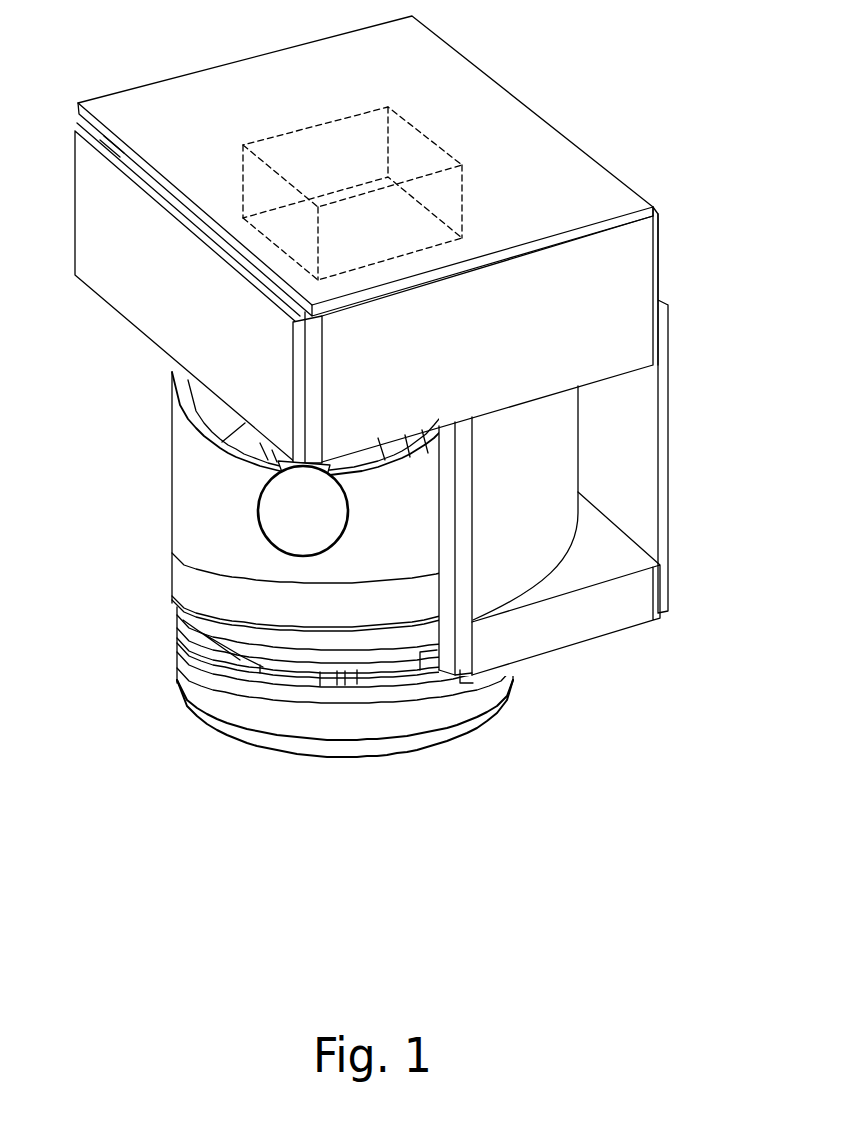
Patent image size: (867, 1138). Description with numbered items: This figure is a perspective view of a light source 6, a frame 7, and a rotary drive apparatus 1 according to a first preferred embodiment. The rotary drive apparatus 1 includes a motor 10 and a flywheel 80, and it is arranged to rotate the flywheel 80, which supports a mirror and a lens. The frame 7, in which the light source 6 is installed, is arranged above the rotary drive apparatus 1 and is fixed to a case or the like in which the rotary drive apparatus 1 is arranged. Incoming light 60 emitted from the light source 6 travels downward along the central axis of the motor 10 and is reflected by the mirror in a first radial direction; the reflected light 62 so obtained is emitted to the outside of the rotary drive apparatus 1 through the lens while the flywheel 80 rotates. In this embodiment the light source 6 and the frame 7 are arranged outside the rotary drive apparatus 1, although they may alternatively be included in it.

The rotary drive apparatus 1 is at (118, 423).
The light source 6 is at (292, 157).
The frame 7 is at (583, 202).
The motor 10 is at (146, 641).
The incoming light 60 is at (325, 432).
The reflected light 62 is at (313, 380).
The flywheel 80 is at (122, 488).